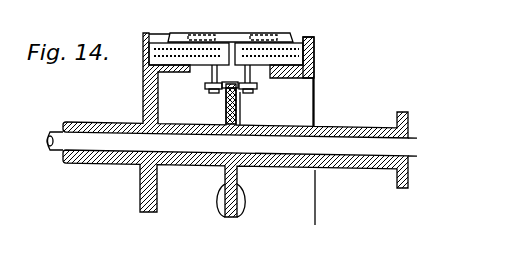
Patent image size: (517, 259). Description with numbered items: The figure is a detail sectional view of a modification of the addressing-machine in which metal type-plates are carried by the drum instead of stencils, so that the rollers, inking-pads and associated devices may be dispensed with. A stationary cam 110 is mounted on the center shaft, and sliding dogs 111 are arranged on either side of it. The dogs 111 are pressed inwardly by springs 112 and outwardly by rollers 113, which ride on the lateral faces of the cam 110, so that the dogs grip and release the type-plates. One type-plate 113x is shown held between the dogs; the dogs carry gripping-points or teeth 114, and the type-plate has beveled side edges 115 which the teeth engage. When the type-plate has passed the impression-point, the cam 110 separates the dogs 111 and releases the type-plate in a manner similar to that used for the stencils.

The stationary cam 110 is at (241, 200).
The sliding dogs 111 is at (285, 64).
The springs 112 is at (232, 129).
The rollers 113 is at (223, 98).
The type-plate 113x is at (232, 34).
The gripping-points or teeth 114 is at (297, 31).
The beveled side edges 115 is at (172, 34).